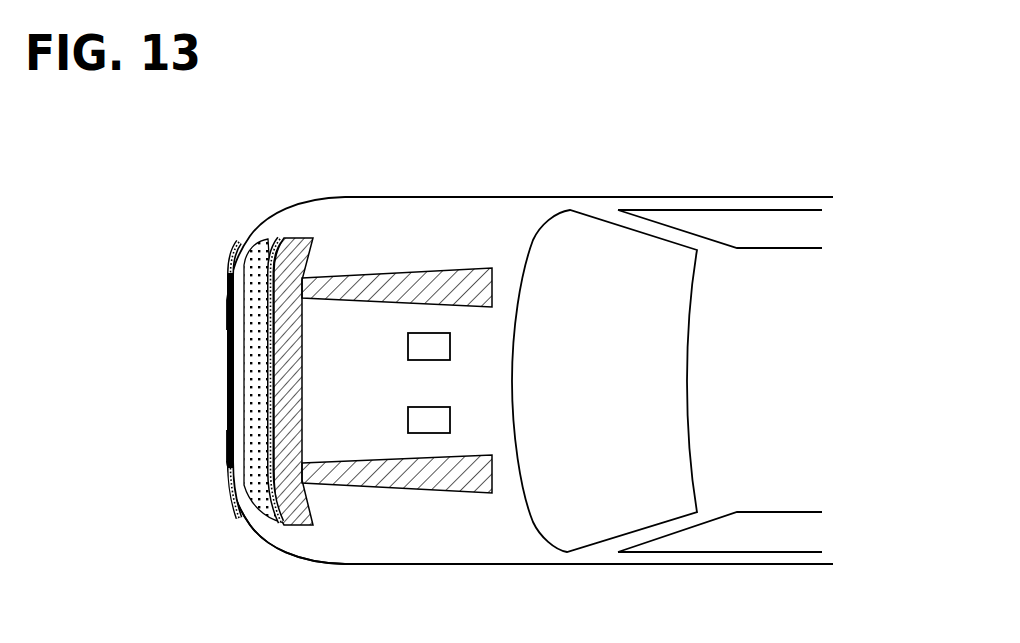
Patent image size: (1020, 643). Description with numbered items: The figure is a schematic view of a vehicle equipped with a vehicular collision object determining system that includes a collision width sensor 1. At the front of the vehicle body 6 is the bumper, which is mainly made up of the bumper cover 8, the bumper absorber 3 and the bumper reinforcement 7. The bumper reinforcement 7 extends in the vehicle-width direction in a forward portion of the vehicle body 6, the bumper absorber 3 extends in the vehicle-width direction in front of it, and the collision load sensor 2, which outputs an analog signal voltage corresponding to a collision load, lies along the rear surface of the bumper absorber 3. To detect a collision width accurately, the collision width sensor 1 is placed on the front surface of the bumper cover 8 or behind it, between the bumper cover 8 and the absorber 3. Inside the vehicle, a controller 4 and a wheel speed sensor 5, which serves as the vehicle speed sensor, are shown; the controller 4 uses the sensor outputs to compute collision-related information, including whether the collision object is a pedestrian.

The collision width sensor 1 is at (232, 270).
The collision load sensor 2 is at (268, 293).
The bumper absorber 3 is at (248, 373).
The controller 4 is at (408, 347).
The wheel speed sensor 5 is at (408, 418).
The vehicle body 6 is at (552, 198).
The bumper reinforcement 7 is at (290, 449).
The bumper cover 8 is at (265, 540).